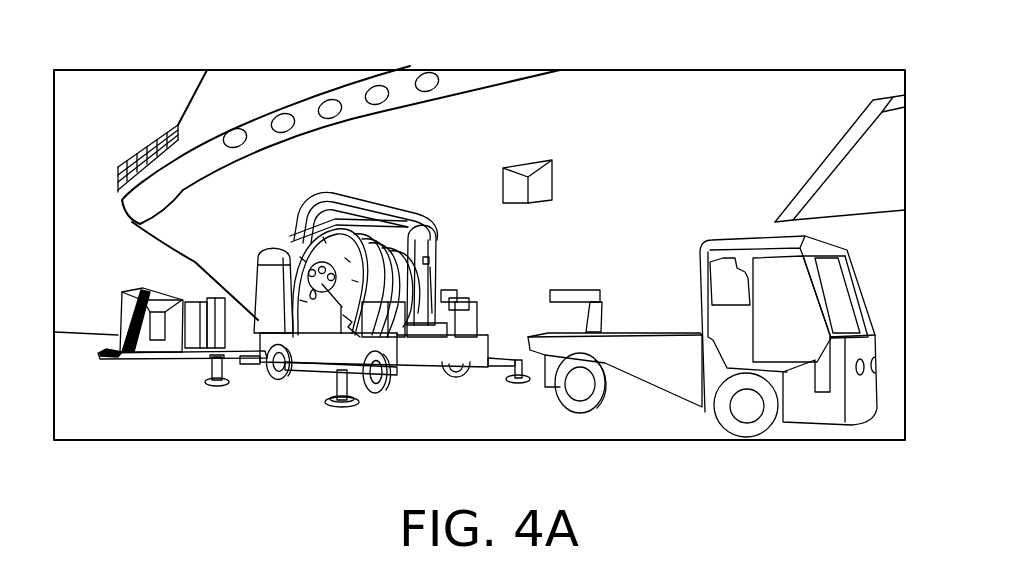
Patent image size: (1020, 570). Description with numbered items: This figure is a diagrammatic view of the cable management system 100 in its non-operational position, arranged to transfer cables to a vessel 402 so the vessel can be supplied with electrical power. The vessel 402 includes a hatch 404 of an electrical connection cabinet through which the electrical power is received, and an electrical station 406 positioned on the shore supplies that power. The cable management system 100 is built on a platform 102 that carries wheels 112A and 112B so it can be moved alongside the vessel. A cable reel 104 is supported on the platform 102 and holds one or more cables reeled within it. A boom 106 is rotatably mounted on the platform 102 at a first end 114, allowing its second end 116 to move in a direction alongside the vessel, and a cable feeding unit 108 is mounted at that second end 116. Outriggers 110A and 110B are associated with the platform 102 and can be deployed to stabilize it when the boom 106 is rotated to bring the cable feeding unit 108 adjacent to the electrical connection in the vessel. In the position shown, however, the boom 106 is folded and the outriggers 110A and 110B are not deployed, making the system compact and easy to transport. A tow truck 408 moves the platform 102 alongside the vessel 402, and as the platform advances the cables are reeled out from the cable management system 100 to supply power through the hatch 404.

The cable management system 100 is at (434, 408).
The platform 102 is at (377, 412).
The cable reel 104 is at (410, 210).
The boom 106 is at (519, 259).
The cable feeding unit 108 is at (197, 290).
The outrigger 110A is at (180, 424).
The outrigger 110B is at (419, 426).
The wheel 112A is at (245, 412).
The wheel 112B is at (416, 421).
The first end 114 is at (537, 286).
The second end 116 is at (343, 197).
The vessel 402 is at (479, 226).
The hatch 404 is at (558, 108).
The electrical station 406 is at (168, 390).
The tow truck 408 is at (702, 363).